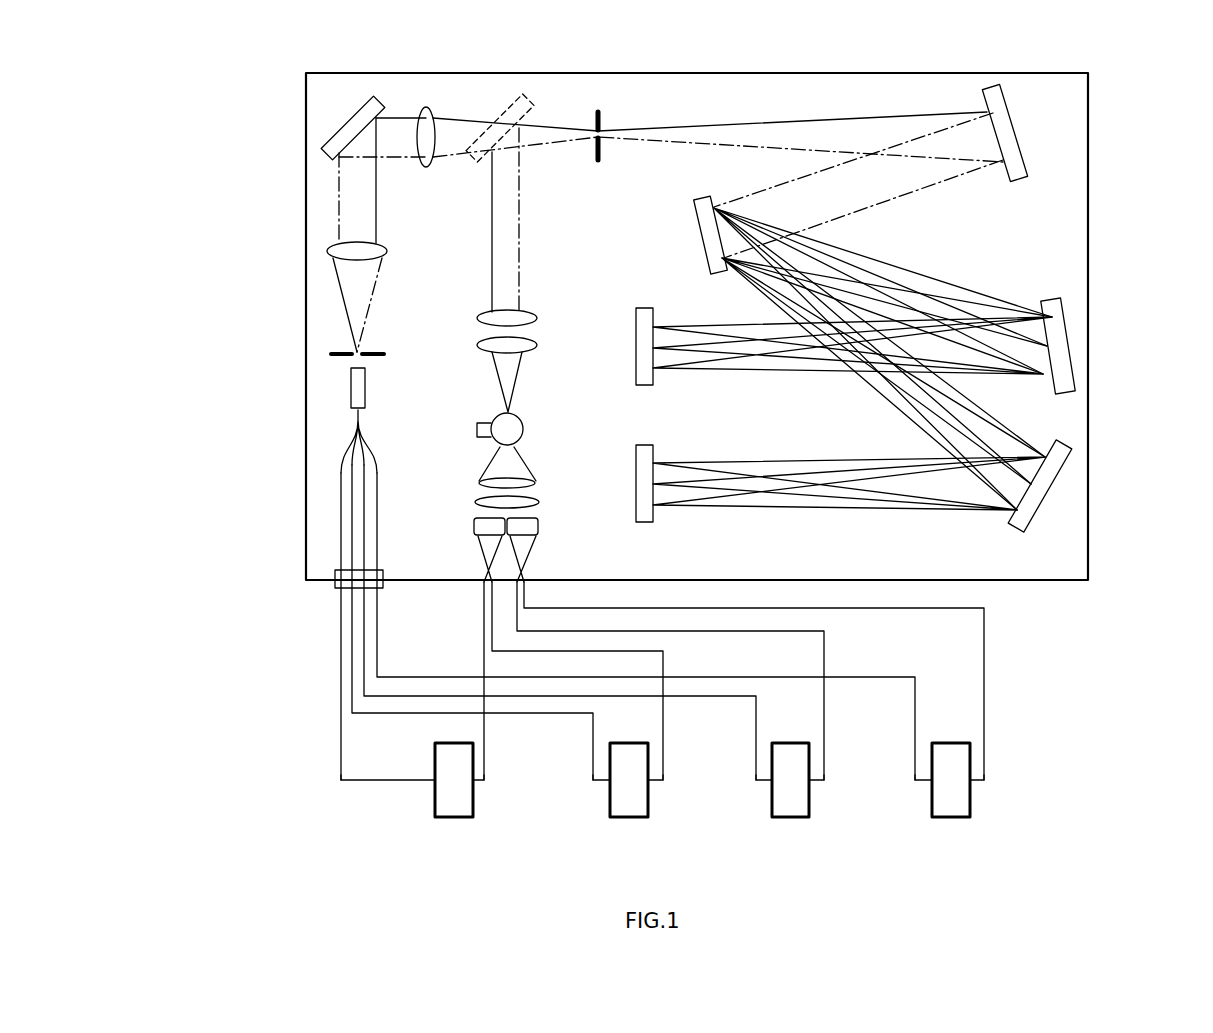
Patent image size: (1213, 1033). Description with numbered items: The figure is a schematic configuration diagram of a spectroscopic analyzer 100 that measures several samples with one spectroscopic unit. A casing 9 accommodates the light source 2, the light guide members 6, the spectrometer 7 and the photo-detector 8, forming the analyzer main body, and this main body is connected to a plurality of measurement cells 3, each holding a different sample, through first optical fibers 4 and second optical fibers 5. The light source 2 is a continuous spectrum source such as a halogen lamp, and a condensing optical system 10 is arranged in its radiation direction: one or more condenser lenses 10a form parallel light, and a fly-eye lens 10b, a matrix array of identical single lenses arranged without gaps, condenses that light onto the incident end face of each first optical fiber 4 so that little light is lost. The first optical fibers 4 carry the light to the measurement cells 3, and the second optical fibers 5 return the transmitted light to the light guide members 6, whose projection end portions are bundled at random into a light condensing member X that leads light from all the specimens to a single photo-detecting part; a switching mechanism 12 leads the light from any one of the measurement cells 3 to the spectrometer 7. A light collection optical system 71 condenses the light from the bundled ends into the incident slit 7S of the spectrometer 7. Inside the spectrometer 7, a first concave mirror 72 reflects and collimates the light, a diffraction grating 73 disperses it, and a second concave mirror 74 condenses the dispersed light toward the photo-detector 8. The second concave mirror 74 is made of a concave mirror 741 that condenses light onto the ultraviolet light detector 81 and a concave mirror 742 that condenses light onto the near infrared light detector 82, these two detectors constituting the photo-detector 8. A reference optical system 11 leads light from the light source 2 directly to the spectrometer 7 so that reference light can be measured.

The spectroscopic analyzer 100 is at (246, 133).
The casing 9 is at (1090, 224).
The spectrometer 7 is at (776, 107).
The incident slit 7S is at (597, 110).
The light collection optical system 71 is at (328, 183).
The first concave mirror 72 is at (990, 85).
The diffraction grating 73 is at (698, 222).
The second concave mirror 74 is at (1105, 415).
The concave mirror 741 is at (1073, 350).
The concave mirror 742 is at (1052, 496).
The photo-detector 8 is at (816, 384).
The ultraviolet light detector 81 is at (640, 308).
The near infrared light detector 82 is at (655, 448).
The reference optical system 11 is at (487, 230).
The light source 2 is at (524, 430).
The condensing optical system 10 is at (567, 514).
The condenser lens 10a is at (540, 503).
The fly-eye lens 10b is at (540, 534).
The light condensing member X is at (346, 437).
The light guide members 6 is at (377, 545).
The switching mechanism 12 is at (336, 588).
The first optical fibers 4 is at (485, 733).
The second optical fibers 5 is at (340, 735).
The measurement cells 3 is at (455, 818).